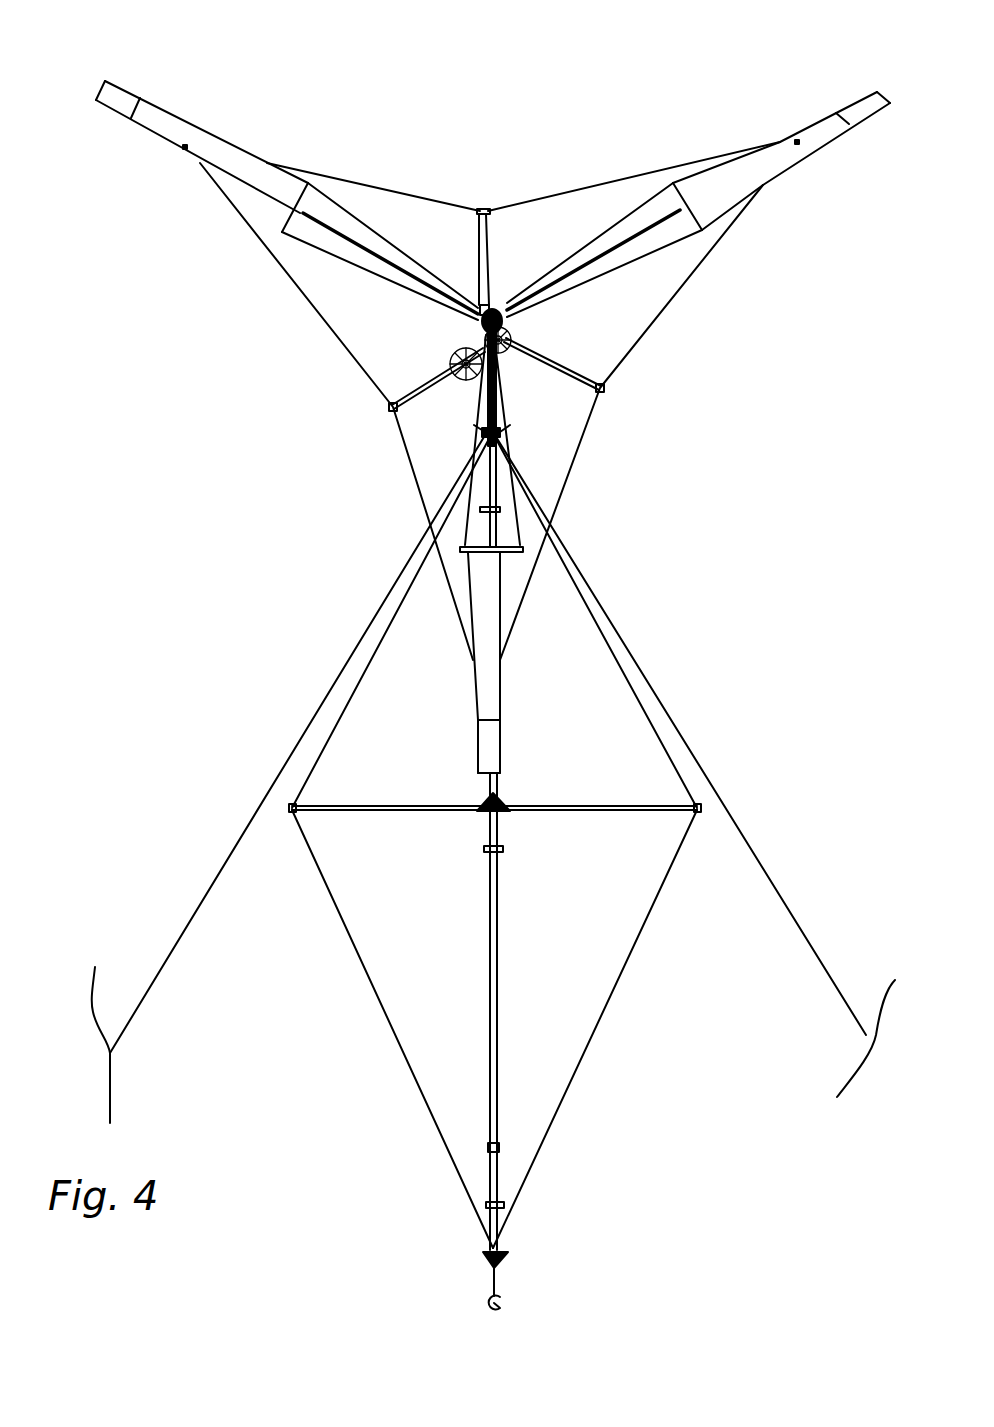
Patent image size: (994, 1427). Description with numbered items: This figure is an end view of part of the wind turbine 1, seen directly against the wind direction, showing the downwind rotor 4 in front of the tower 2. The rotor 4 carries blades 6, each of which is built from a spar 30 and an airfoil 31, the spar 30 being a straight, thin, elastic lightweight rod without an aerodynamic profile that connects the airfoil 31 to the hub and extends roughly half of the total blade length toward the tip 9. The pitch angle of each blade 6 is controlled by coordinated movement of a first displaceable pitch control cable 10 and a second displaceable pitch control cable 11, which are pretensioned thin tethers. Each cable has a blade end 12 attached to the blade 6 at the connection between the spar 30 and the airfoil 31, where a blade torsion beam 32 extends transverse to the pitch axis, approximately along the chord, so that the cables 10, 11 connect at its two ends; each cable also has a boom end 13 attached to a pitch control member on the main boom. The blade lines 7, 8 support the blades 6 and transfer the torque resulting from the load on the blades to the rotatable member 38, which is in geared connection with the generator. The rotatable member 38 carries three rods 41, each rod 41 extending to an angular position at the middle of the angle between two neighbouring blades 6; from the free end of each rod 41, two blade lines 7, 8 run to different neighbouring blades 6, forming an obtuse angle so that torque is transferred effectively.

The wind turbine 1 is at (205, 590).
The tower 2 is at (500, 967).
The rotor 4 is at (245, 360).
The blade 6 is at (818, 138).
The blade line 7 is at (622, 182).
The blade line 8 is at (683, 293).
The tip 9 is at (100, 90).
The first displaceable pitch control cable 10 is at (390, 240).
The second displaceable pitch control cable 11 is at (354, 265).
The blade end 12 is at (672, 186).
The boom end 13 is at (513, 300).
The spar 30 is at (345, 222).
The airfoil 31 is at (212, 147).
The blade torsion beam 32 is at (282, 222).
The rotatable member 38 is at (475, 322).
The rod 41 is at (550, 355).